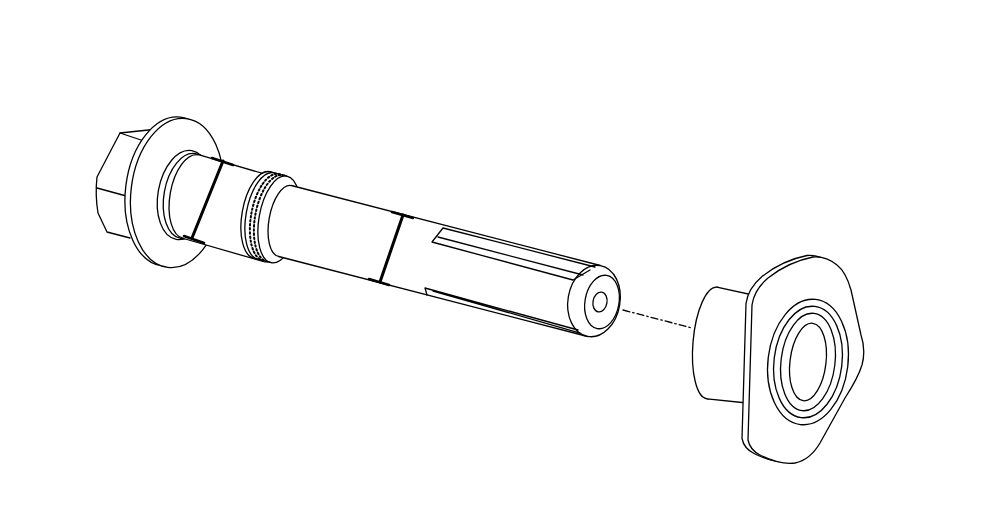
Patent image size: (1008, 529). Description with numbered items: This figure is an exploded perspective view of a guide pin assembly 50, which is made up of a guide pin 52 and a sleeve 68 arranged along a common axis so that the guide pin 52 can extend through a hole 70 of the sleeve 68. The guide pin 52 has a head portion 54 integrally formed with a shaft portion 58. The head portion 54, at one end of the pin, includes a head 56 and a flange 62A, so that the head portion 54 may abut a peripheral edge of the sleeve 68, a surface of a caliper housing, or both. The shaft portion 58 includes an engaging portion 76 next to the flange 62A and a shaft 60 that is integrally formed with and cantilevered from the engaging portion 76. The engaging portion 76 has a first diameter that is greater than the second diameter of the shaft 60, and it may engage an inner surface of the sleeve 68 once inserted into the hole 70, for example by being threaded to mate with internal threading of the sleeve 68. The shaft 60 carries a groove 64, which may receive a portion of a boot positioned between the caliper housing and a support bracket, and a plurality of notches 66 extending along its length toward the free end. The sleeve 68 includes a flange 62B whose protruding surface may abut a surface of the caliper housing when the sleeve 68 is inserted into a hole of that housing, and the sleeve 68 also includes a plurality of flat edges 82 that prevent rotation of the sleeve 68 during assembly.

The guide pin assembly 50 is at (670, 137).
The guide pin 52 is at (412, 202).
The head portion 54 is at (233, 120).
The head 56 is at (126, 172).
The shaft portion 58 is at (643, 223).
The shaft 60 is at (312, 243).
The flange 62A is at (208, 148).
The flange 62B is at (788, 437).
The groove 64 is at (270, 243).
The notches 66 is at (503, 258).
The sleeve 68 is at (850, 237).
The hole 70 is at (807, 362).
The engaging portion 76 is at (228, 235).
The flat edges 82 is at (862, 326).